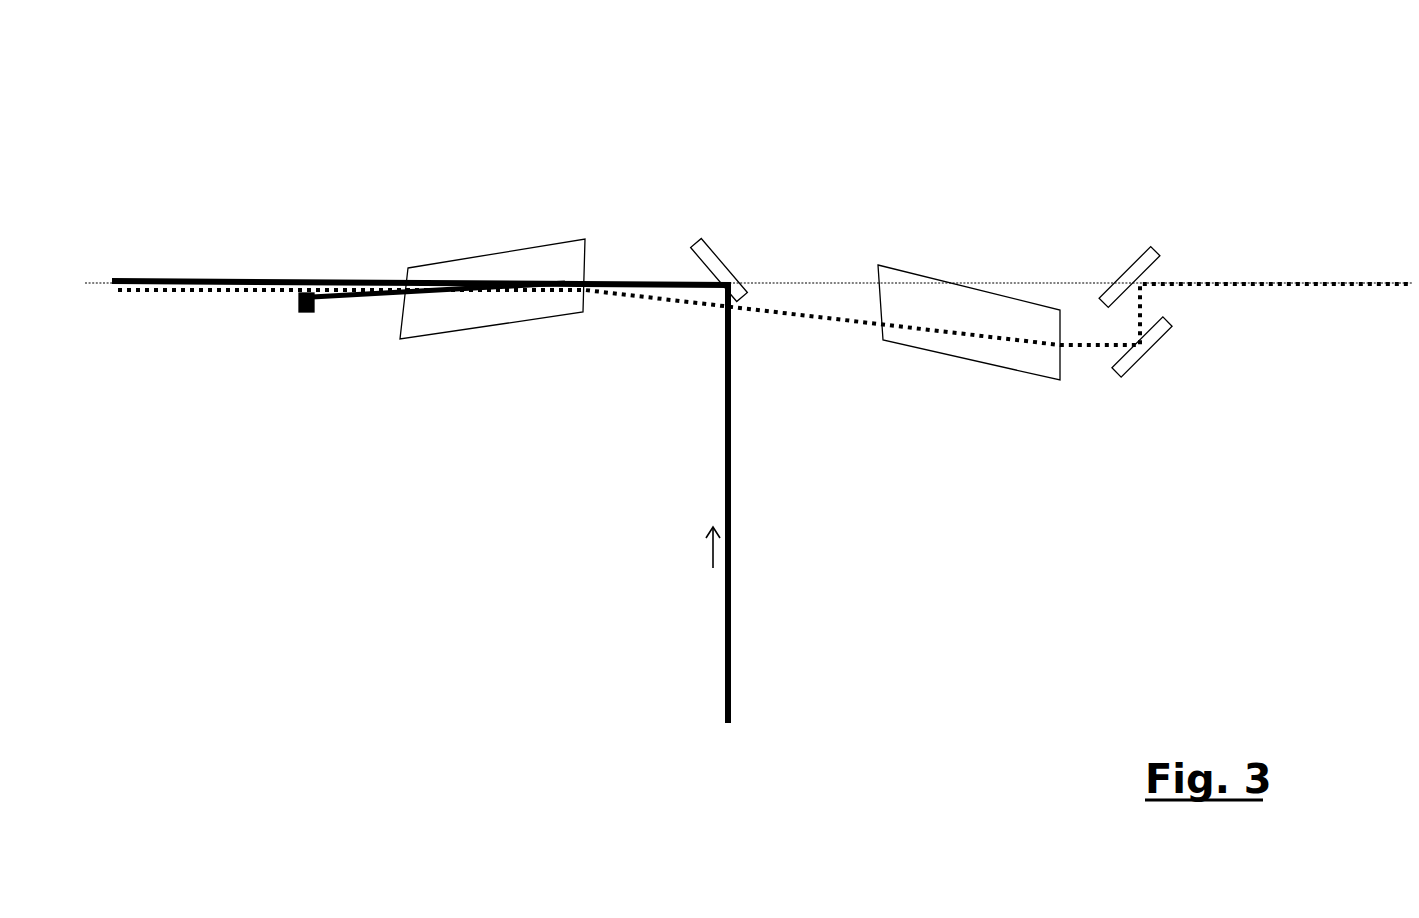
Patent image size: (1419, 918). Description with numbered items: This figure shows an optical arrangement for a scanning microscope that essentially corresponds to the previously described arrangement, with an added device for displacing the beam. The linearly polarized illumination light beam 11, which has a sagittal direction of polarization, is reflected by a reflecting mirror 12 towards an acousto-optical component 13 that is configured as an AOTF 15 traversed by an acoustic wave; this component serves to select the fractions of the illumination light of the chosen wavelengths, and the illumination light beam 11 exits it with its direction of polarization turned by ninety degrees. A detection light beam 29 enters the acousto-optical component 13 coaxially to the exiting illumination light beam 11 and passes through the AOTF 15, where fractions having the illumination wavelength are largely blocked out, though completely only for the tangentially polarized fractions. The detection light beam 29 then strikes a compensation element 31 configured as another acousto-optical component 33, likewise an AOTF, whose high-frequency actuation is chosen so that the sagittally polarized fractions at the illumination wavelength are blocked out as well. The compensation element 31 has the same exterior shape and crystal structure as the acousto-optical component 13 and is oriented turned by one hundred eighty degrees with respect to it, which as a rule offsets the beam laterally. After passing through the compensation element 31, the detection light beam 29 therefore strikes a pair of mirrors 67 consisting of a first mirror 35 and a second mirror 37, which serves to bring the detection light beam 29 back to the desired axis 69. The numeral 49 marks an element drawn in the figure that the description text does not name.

The illumination light beam 11 is at (252, 281).
The reflecting mirror 12 is at (702, 240).
The acousto-optical component 13 is at (483, 214).
The AOTF 15 is at (538, 258).
The detection light beam 29 is at (182, 291).
The compensation element 31 is at (1119, 289).
The other acousto-optical component 33 is at (1032, 360).
The first mirror 35 is at (1140, 268).
The second mirror 37 is at (1163, 332).
The detector 49 is at (297, 314).
The pair of mirrors 67 is at (1229, 326).
The desired axis 69 is at (785, 283).